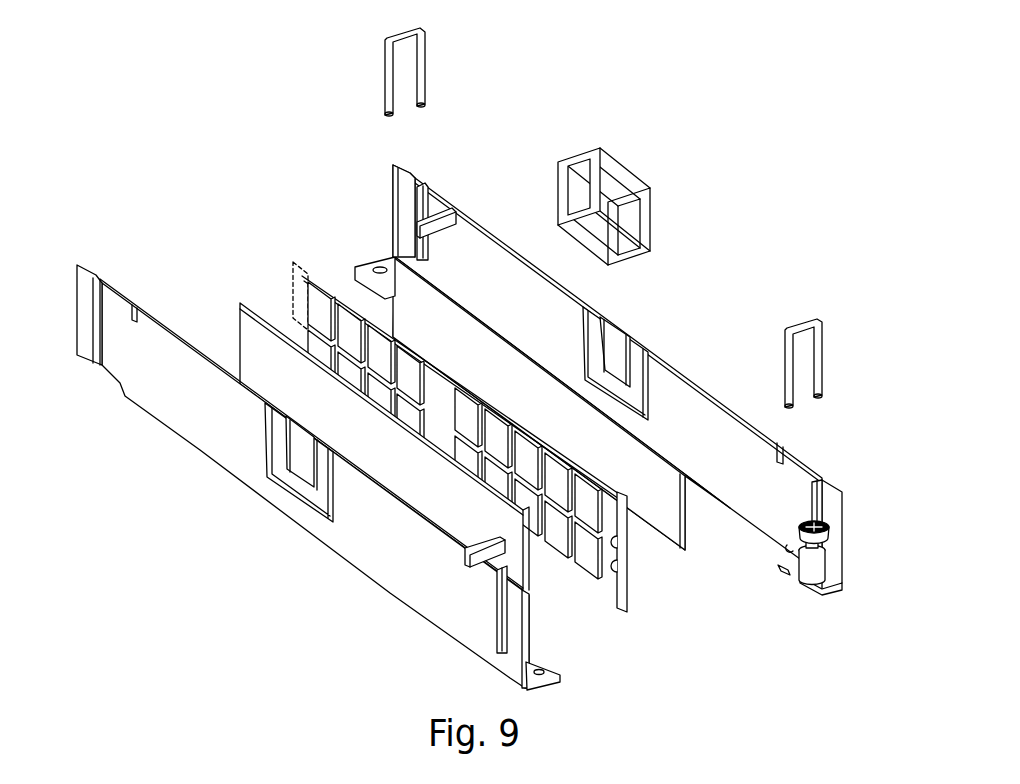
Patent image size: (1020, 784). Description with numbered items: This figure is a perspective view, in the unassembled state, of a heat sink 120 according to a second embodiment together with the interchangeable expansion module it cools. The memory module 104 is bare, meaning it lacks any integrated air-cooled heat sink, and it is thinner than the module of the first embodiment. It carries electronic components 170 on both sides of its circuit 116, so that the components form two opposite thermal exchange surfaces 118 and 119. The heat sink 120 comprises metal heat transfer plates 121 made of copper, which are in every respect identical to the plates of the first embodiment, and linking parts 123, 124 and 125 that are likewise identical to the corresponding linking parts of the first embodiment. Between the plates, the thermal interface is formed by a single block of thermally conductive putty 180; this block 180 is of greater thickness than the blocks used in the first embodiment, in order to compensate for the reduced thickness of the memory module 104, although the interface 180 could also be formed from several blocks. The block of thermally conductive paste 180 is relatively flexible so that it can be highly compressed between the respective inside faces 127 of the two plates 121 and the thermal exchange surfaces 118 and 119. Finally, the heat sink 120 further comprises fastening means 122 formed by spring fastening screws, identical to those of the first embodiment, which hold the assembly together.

The memory module 104 is at (474, 405).
The circuit 116 is at (662, 562).
The thermal exchange surface 118 is at (556, 548).
The thermal exchange surface 119 is at (630, 544).
The heat sink 120 is at (157, 254).
The metal heat transfer plate 121 is at (468, 235).
The fastening means 122 is at (803, 580).
The linking part 123 is at (426, 47).
The linking part 124 is at (802, 322).
The linking part 125 is at (578, 150).
The inside face 127 is at (518, 277).
The electronic component 170 is at (323, 277).
The block of thermally conductive putty 180 is at (397, 262).